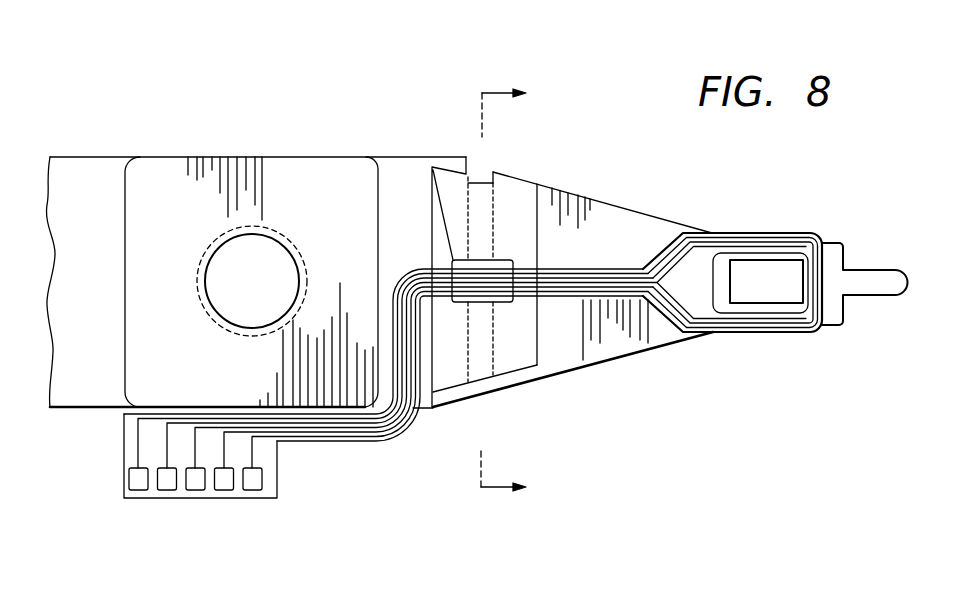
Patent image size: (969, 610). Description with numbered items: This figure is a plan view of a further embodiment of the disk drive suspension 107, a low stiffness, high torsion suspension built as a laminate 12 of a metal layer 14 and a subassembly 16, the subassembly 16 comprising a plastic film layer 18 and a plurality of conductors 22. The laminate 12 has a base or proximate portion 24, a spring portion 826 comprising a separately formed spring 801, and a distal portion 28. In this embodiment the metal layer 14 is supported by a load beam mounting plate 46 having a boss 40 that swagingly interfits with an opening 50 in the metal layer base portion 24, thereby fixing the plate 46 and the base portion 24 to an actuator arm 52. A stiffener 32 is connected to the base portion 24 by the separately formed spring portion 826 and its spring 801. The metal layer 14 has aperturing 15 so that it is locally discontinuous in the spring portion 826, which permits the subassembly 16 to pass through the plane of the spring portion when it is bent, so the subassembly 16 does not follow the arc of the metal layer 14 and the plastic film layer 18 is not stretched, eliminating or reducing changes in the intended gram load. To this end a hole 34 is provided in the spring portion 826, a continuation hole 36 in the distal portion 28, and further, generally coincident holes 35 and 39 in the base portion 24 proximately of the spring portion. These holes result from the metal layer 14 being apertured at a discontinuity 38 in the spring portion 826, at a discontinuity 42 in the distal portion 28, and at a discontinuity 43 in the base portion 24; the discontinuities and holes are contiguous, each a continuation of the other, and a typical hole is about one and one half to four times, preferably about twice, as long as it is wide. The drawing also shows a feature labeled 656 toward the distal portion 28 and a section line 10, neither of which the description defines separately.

The suspension 107 is at (53, 140).
The actuator arm 52 is at (116, 157).
The load beam mounting plate 46 is at (140, 265).
The laminate 12 is at (288, 152).
The opening 50 is at (214, 254).
The boss 40 is at (250, 345).
The base portion 24 is at (450, 398).
The hole 39 is at (400, 298).
The discontinuity 43 is at (436, 400).
The subassembly 16 is at (557, 240).
The discontinuity 42 is at (497, 260).
The discontinuity 38 is at (477, 260).
The conductors 22 is at (418, 272).
The hole 35 is at (431, 290).
The spring portion 826 is at (437, 180).
The metal layer 14 is at (620, 248).
The connector window 656 is at (772, 273).
The plastic film layer 18 is at (597, 297).
The distal portion 28 is at (665, 330).
The continuation hole 36 is at (505, 303).
The aperturing 15 is at (497, 303).
The spring 801 is at (488, 380).
The stiffener 32 is at (590, 370).
The hole 34 is at (470, 303).
The section line 10 is at (526, 292).